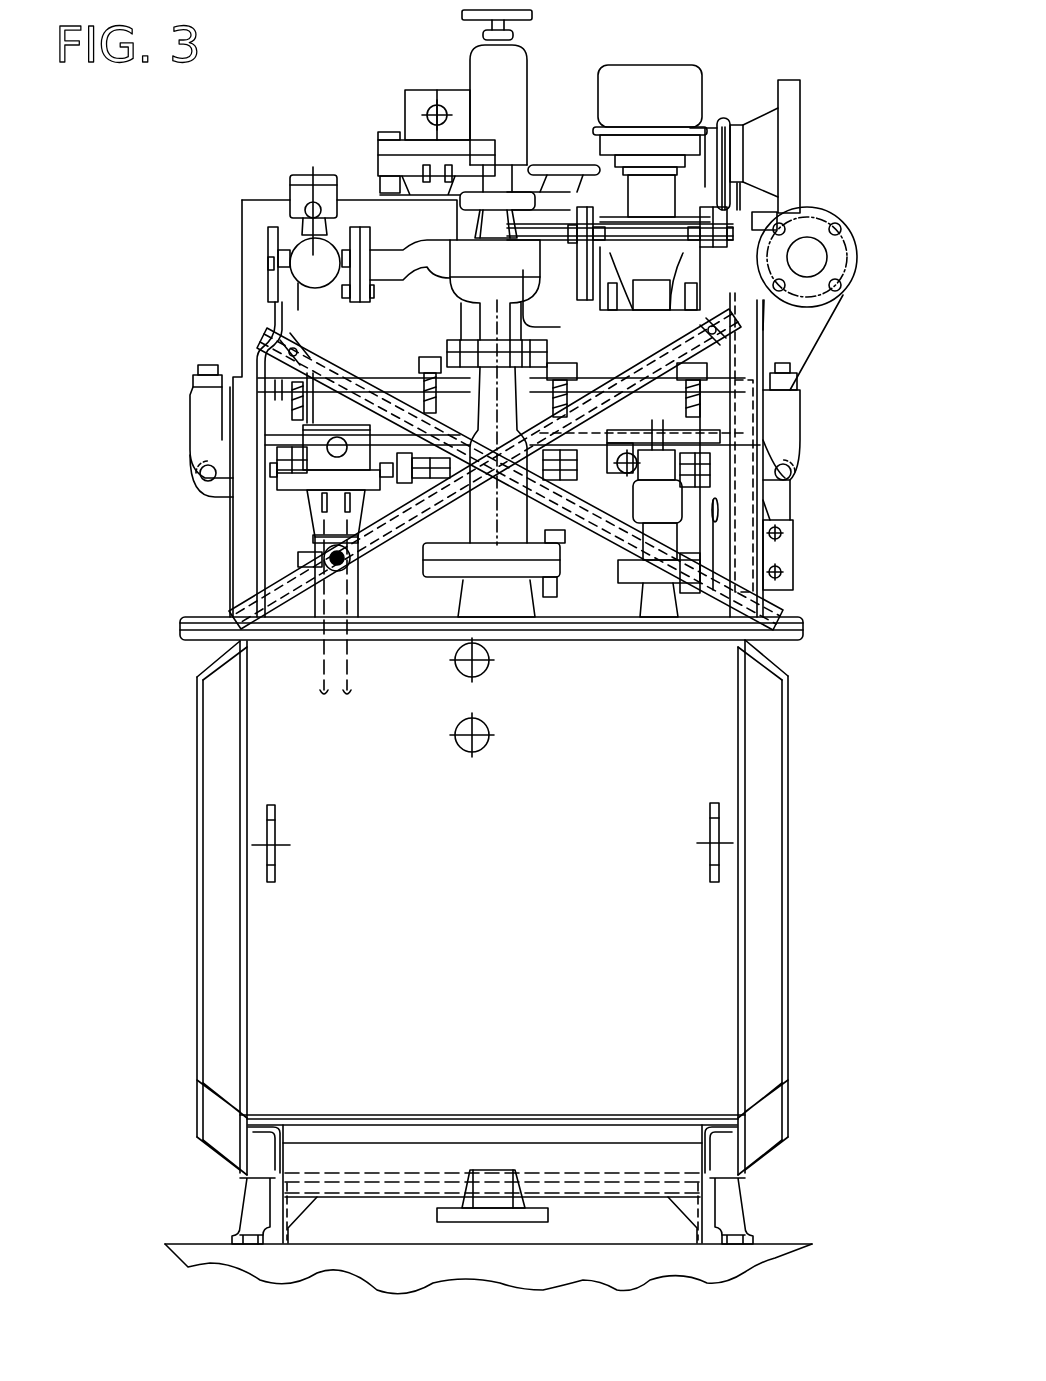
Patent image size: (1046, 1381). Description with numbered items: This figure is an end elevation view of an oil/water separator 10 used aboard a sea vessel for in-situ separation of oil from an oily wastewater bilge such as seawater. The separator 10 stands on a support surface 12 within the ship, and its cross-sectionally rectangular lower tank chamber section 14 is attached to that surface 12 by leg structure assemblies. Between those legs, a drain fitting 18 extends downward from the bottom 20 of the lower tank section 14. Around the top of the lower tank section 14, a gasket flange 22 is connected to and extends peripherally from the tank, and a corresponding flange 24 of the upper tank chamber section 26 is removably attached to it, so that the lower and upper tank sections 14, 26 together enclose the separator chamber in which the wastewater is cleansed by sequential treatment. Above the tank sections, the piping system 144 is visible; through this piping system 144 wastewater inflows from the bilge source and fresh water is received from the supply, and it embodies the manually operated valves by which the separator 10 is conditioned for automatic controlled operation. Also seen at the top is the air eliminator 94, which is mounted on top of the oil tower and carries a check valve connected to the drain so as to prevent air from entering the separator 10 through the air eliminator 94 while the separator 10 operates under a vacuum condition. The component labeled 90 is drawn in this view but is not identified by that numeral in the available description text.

The oil/water separator 10 is at (208, 160).
The support surface 12 is at (197, 1244).
The lower tank chamber section 14 is at (698, 968).
The drain fitting 18 is at (535, 1223).
The bottom 20 is at (615, 1197).
The gasket flange 22 is at (197, 643).
The flange 24 is at (200, 617).
The upper tank chamber section 26 is at (232, 530).
The control box 90 is at (403, 93).
The air eliminator 94 is at (462, 68).
The piping system 144 is at (522, 238).